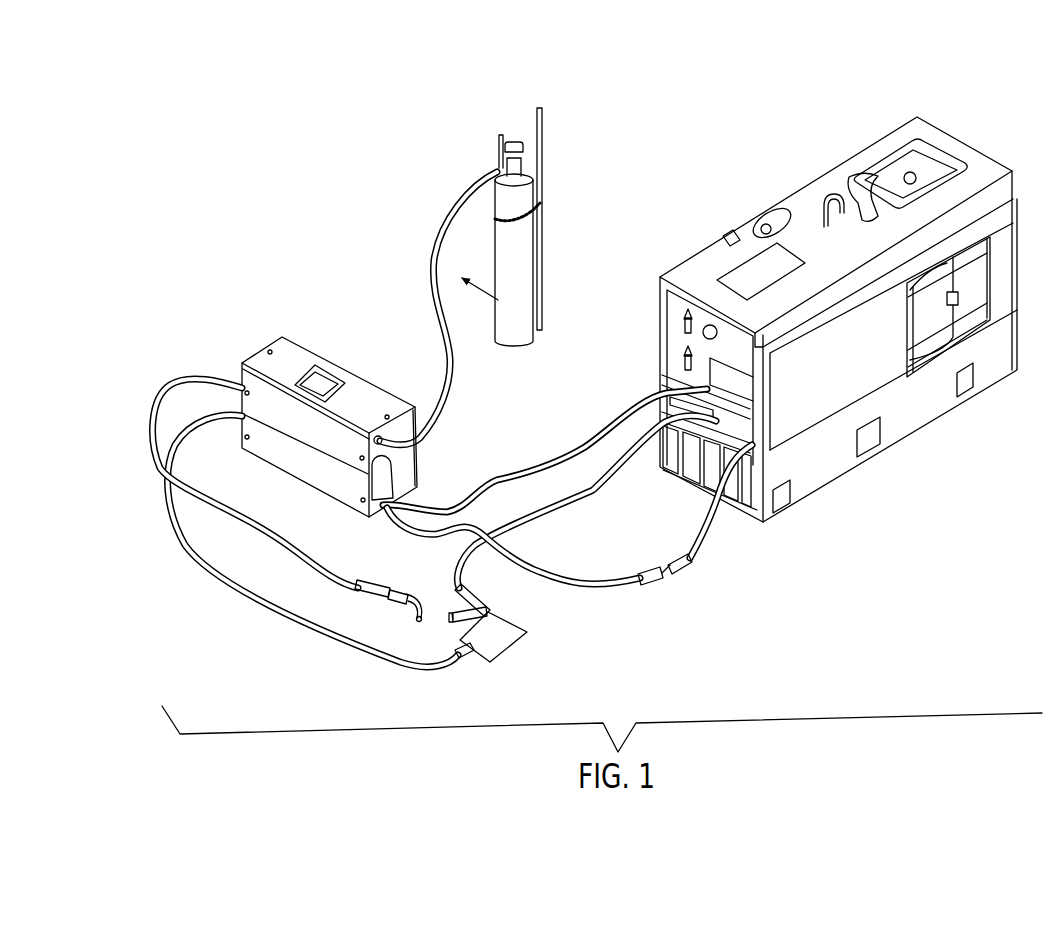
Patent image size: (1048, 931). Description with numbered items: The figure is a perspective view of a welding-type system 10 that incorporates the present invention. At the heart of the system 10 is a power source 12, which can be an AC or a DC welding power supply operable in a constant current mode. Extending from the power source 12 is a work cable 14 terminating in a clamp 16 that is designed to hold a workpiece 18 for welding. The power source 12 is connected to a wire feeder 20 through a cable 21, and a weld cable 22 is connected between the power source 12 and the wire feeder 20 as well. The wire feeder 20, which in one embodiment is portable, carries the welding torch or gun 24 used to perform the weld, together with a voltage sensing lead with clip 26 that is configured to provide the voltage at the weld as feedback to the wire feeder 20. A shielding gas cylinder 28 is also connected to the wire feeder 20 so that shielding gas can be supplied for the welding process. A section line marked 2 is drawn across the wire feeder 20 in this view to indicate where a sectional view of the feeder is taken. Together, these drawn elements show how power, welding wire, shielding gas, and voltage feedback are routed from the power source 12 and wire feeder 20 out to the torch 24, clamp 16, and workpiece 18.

The welding-type system 10 is at (276, 164).
The power source 12 is at (846, 165).
The work cable 14 is at (549, 504).
The clamp 16 is at (473, 597).
The workpiece 18 is at (503, 643).
The wire feeder 20 is at (283, 338).
The cable 21 is at (637, 405).
The weld cable 22 is at (611, 597).
The welding torch or gun 24 is at (390, 598).
The voltage sensing lead with clip 26 is at (473, 665).
The shielding gas cylinder 28 is at (497, 168).
The section line 2- 2 is at (232, 368).